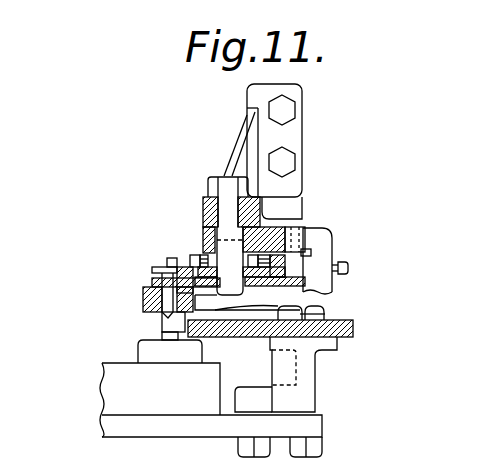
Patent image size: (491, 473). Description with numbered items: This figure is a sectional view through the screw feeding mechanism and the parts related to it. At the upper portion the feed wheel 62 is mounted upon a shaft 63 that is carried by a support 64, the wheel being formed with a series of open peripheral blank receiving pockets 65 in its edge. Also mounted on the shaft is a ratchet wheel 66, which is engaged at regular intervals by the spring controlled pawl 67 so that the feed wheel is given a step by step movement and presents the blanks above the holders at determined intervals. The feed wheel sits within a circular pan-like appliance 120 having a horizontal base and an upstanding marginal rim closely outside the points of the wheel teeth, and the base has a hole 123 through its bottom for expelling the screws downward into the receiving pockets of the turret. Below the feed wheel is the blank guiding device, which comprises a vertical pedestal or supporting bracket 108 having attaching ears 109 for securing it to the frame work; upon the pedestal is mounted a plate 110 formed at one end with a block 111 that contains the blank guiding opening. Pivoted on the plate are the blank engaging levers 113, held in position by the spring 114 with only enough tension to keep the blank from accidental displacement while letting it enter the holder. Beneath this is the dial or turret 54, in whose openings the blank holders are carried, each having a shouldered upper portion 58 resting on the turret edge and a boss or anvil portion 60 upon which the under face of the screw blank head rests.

The dial or turret 54 is at (113, 387).
The shouldered upper portion 58 is at (147, 353).
The boss or anvil portion 60 is at (160, 335).
The feed wheel 62 is at (178, 265).
The shaft 63 is at (205, 232).
The support 64 is at (317, 238).
The blank receiving pockets 65 is at (168, 262).
The ratchet wheel 66 is at (348, 267).
The spring controlled pawl 67 is at (309, 252).
The pedestal or supporting bracket 108 is at (318, 374).
The attaching ears 109 is at (257, 383).
The plate 110 is at (353, 337).
The block 111 is at (162, 322).
The blank engaging levers 113 is at (300, 302).
The spring 114 is at (340, 310).
The pan-like appliance 120 is at (155, 281).
The hole 123 is at (202, 300).